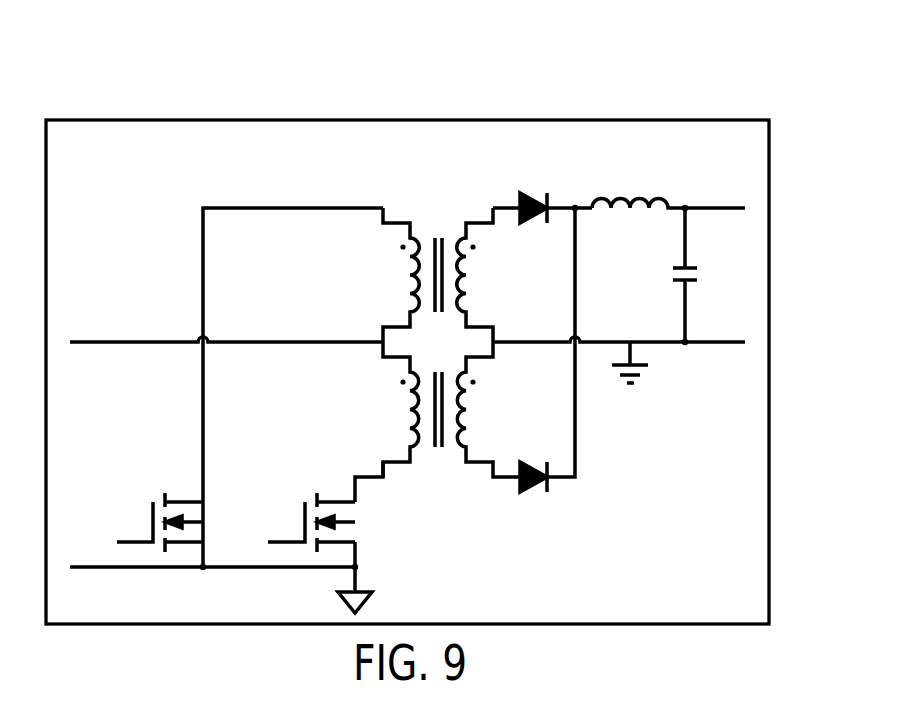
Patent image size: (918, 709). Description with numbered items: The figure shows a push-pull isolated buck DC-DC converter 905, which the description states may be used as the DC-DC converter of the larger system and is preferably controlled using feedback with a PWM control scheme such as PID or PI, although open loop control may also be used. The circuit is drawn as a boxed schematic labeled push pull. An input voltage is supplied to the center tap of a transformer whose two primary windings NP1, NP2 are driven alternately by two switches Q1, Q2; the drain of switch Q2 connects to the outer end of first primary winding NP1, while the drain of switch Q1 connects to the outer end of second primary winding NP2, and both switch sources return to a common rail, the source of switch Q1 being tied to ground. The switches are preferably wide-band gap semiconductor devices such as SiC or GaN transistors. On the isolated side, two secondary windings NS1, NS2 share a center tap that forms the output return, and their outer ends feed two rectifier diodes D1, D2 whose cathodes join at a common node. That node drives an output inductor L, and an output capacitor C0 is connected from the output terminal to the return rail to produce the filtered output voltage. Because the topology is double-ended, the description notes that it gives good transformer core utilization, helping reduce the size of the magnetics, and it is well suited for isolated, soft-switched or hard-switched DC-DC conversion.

The push-pull isolated buck DC-DC converter 905 is at (728, 92).
The first switching transistor Q1 is at (311, 522).
The second switching transistor Q2 is at (160, 522).
The first rectifier diode D1 is at (542, 194).
The second rectifier diode D2 is at (547, 350).
The output inductor L is at (668, 187).
The output capacitor C0 is at (701, 275).
The first primary winding NP1 is at (392, 275).
The second primary winding NP2 is at (392, 409).
The first secondary winding NS1 is at (483, 275).
The second secondary winding NS2 is at (488, 409).